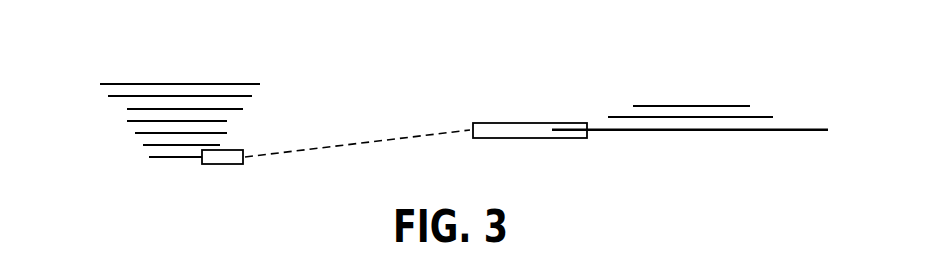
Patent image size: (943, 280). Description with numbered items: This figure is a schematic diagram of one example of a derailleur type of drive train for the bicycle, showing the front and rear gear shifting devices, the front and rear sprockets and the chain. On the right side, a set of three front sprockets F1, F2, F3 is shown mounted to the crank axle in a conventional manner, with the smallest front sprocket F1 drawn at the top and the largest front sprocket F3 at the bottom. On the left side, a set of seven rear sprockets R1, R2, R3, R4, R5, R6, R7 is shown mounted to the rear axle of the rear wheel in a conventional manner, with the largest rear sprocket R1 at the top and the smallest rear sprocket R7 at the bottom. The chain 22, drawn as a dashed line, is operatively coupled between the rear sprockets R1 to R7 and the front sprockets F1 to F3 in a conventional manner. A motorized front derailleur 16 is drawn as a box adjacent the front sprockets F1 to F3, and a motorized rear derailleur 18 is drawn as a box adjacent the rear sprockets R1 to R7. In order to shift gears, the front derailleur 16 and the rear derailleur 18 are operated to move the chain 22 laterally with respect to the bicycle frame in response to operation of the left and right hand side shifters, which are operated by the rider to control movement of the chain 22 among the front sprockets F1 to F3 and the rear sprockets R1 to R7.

The rear sprocket R1 is at (220, 84).
The rear sprocket R2 is at (247, 99).
The rear sprocket R3 is at (126, 111).
The rear sprocket R4 is at (227, 122).
The rear sprocket R5 is at (142, 134).
The rear sprocket R6 is at (146, 145).
The rear sprocket R7 is at (166, 158).
The motorized front derailleur 16 is at (537, 106).
The motorized rear derailleur 18 is at (229, 164).
The chain 22 is at (393, 134).
The front sprocket F1 is at (668, 106).
The front sprocket F2 is at (762, 117).
The front sprocket F3 is at (798, 129).